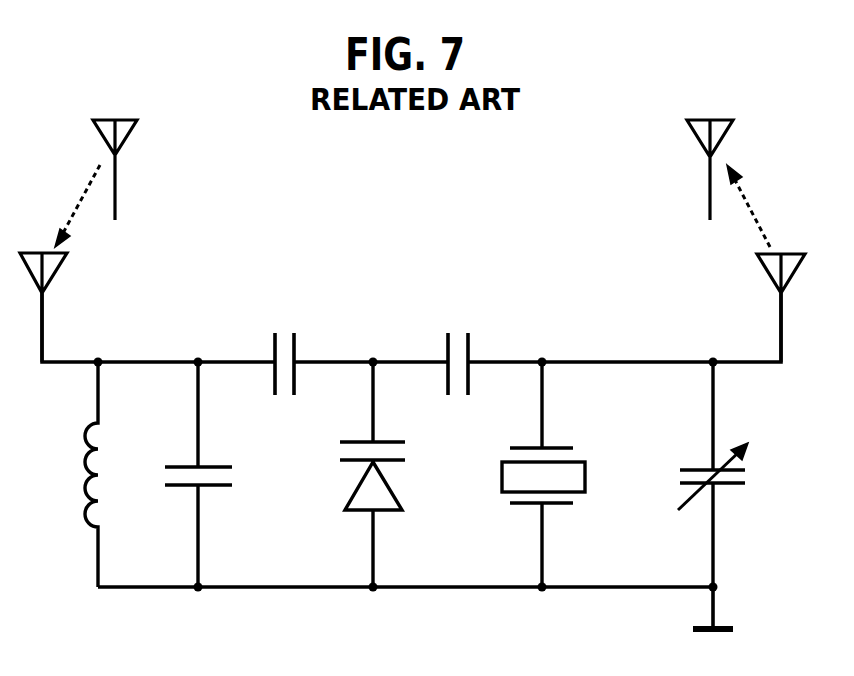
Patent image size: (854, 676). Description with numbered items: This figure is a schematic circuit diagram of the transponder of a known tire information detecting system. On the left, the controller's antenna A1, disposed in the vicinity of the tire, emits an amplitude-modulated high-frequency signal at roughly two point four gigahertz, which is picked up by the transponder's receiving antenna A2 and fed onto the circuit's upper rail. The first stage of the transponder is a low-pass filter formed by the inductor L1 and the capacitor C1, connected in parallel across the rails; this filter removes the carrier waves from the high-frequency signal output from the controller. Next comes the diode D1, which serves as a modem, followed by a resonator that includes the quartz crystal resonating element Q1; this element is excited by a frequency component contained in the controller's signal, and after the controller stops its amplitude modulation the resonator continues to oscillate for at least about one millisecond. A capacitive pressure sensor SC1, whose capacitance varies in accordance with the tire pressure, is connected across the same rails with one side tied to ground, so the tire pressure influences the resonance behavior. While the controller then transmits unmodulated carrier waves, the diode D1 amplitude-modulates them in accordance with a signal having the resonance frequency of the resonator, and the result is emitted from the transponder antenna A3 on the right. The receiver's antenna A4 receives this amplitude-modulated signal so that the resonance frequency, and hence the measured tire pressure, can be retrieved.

The antenna A1 is at (125, 170).
The second antenna A2 is at (52, 307).
The antenna A3 is at (771, 308).
The antenna A4 is at (699, 170).
The low-pass filter inductor L1 is at (74, 474).
The low-pass filter capacitor C1 is at (191, 474).
The diode D1 is at (362, 474).
The quartz crystal resonating element Q1 is at (538, 474).
The capacitive pressure sensor SC1 is at (700, 474).